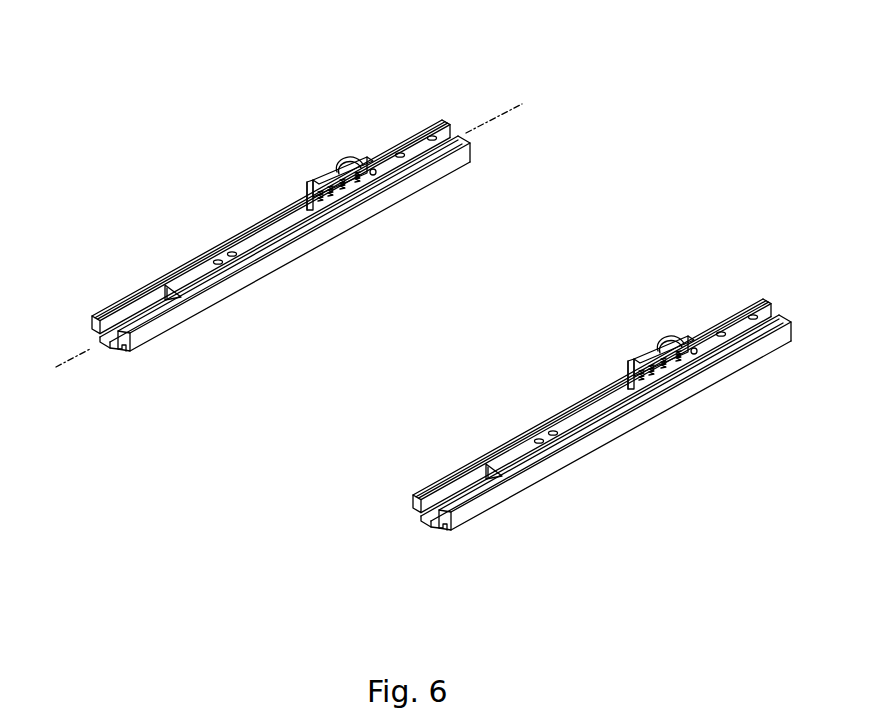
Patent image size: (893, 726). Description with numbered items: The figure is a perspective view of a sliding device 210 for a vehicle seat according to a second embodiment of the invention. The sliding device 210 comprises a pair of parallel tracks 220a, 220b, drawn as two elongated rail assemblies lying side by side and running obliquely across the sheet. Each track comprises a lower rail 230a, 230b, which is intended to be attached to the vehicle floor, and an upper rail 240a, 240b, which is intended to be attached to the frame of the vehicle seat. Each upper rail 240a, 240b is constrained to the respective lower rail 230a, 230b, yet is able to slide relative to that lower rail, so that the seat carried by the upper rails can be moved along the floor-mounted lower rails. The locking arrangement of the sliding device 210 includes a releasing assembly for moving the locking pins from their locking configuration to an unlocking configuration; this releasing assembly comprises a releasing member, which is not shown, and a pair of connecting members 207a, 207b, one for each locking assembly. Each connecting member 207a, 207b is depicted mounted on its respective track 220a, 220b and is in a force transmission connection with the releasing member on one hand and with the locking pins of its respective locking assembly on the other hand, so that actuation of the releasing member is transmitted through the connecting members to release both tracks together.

The sliding device 210 is at (681, 146).
The track 220a is at (241, 170).
The track 220b is at (592, 406).
The lower rail 230a is at (161, 333).
The lower rail 230b is at (606, 455).
The upper rail 240a is at (190, 280).
The upper rail 240b is at (488, 427).
The connecting member 207a is at (354, 143).
The connecting member 207b is at (662, 315).